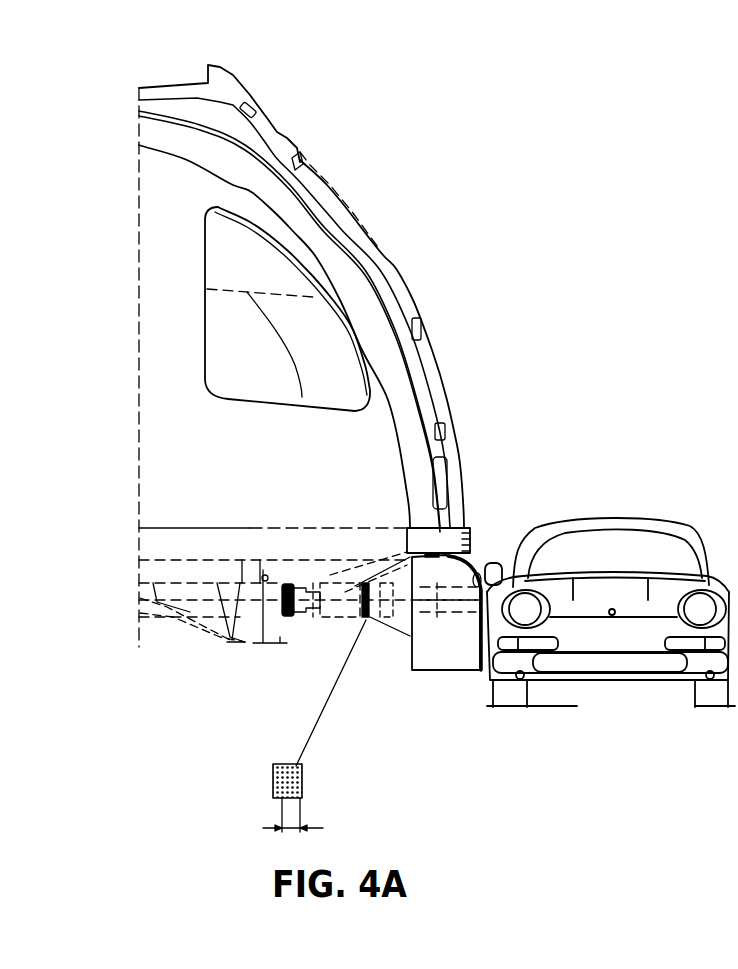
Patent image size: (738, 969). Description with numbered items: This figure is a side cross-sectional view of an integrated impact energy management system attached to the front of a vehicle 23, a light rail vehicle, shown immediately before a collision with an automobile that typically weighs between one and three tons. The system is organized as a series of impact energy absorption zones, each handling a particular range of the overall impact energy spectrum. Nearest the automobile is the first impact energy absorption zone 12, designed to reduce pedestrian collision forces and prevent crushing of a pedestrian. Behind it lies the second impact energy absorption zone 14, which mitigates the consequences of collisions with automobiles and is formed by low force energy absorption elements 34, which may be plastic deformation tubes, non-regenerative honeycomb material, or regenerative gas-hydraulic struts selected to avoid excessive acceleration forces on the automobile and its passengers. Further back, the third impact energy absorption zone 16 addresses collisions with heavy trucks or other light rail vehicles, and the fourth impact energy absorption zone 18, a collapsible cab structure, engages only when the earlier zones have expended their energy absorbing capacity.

The vehicle 23 is at (446, 210).
The first impact energy absorption zone 12 is at (490, 550).
The second impact energy absorption zone 14 is at (434, 634).
The third impact energy absorption zone 16 is at (333, 641).
The fourth impact energy absorption zone 18 is at (187, 649).
The low force energy absorption elements 34 is at (273, 780).